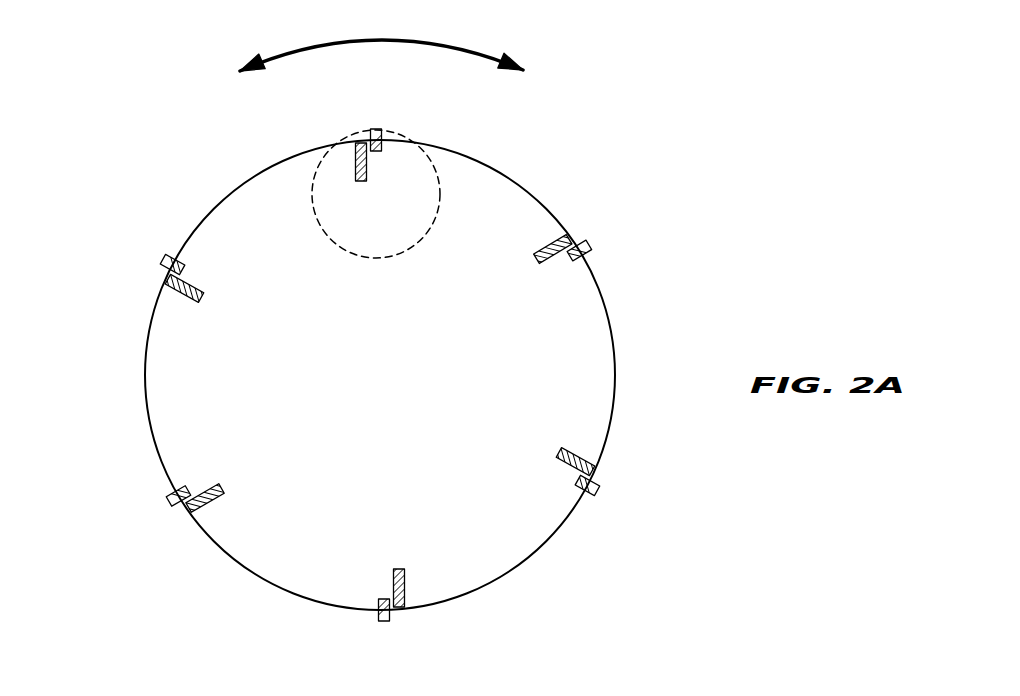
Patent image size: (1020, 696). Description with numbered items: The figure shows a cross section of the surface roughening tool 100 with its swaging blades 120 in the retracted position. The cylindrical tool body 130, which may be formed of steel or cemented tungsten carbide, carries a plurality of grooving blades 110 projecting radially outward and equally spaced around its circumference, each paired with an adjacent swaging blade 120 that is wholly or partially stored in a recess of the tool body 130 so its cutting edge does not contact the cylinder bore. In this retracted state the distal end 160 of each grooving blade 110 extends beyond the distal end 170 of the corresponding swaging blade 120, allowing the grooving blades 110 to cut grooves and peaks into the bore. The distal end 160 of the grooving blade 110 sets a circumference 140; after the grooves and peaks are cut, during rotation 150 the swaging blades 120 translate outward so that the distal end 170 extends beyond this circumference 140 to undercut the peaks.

The surface roughening tool 100 is at (162, 92).
The grooving blades 110 is at (382, 140).
The swaging blades 120 is at (357, 165).
The tool body 130 is at (614, 337).
The circumference 140 is at (423, 237).
The rotation 150 is at (346, 39).
The distal end of grooving blade 160 is at (373, 128).
The distal end of swaging blade 170 is at (362, 143).